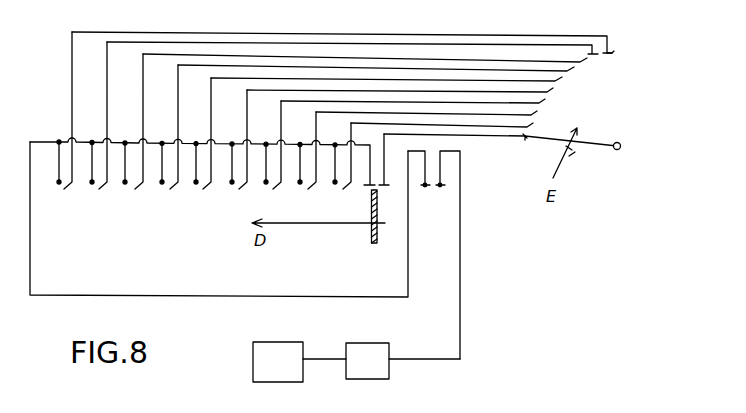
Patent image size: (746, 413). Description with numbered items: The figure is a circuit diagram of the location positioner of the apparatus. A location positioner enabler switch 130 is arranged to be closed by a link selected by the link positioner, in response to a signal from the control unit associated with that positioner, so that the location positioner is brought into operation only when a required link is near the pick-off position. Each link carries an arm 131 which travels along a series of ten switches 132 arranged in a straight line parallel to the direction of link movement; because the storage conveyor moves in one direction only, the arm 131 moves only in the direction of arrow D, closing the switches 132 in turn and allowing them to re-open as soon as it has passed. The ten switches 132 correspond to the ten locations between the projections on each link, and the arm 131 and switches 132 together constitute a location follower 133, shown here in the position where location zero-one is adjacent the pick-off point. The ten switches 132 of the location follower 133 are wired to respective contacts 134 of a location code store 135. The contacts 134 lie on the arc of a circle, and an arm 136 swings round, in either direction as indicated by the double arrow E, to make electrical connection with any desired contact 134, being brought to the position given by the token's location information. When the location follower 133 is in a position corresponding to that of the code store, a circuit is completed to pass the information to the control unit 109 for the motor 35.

The motor 35 is at (288, 374).
The control unit 109 is at (384, 373).
The location positioner enabler switch 130 is at (430, 188).
The arm 131 is at (370, 232).
The switches 132 is at (88, 175).
The location follower 133 is at (175, 263).
The contacts 134 is at (611, 53).
The location code store 135 is at (630, 115).
The arm 136 is at (598, 148).